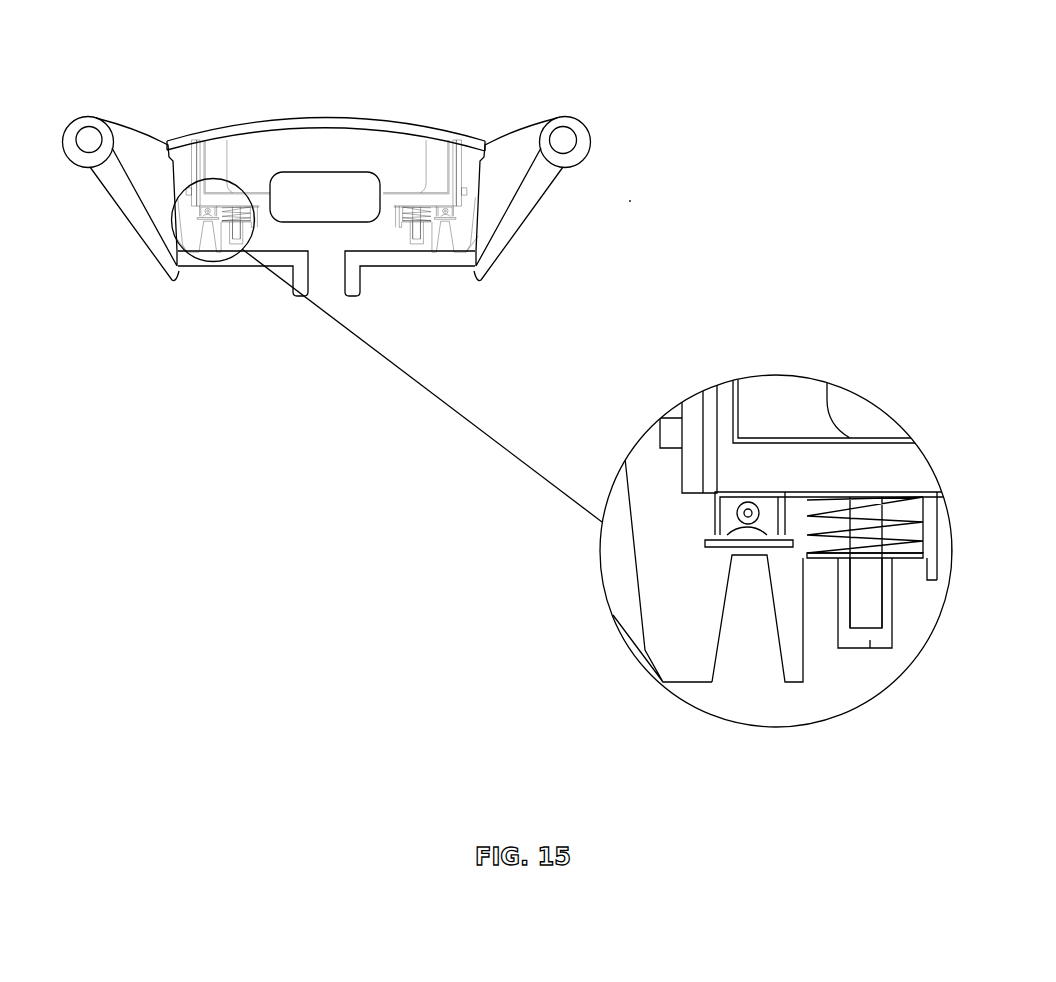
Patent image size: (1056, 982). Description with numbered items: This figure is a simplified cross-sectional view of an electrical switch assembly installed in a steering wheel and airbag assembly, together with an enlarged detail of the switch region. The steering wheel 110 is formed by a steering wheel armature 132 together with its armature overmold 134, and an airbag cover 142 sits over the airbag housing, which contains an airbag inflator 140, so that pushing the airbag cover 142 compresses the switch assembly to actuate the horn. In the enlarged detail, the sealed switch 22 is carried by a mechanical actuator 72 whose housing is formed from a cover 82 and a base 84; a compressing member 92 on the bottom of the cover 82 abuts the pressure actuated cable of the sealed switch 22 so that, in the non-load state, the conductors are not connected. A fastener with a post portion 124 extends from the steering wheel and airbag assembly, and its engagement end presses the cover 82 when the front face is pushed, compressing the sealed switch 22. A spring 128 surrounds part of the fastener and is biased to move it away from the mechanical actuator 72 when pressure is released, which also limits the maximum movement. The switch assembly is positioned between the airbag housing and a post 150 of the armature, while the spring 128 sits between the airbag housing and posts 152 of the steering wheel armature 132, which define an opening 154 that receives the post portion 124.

The sealed switch 22 is at (745, 503).
The mechanical actuator 72 is at (700, 518).
The cover 82 is at (713, 546).
The base 84 is at (711, 500).
The compressing member 92 is at (766, 549).
The steering wheel 110 is at (590, 183).
The post portion 124 is at (863, 608).
The spring 128 is at (817, 497).
The steering wheel armature 132 is at (567, 138).
The armature overmold 134 is at (515, 150).
The airbag inflator 140 is at (405, 151).
The airbag cover 142 is at (353, 119).
The post 150 is at (713, 613).
The posts 152 is at (815, 600).
The opening 154 is at (870, 636).